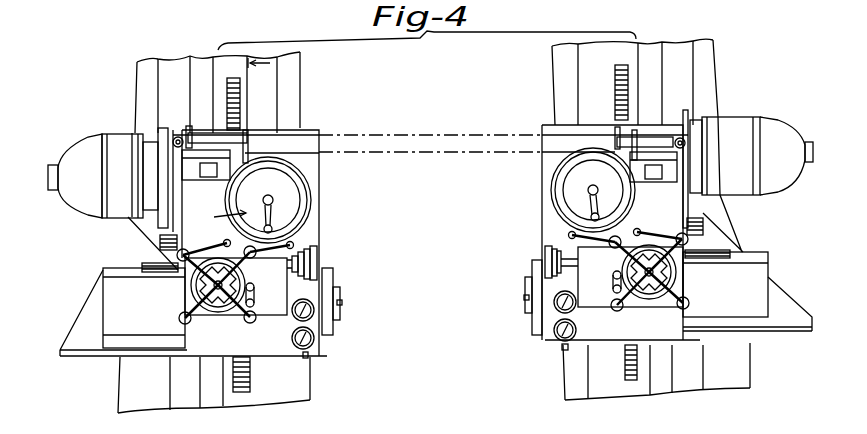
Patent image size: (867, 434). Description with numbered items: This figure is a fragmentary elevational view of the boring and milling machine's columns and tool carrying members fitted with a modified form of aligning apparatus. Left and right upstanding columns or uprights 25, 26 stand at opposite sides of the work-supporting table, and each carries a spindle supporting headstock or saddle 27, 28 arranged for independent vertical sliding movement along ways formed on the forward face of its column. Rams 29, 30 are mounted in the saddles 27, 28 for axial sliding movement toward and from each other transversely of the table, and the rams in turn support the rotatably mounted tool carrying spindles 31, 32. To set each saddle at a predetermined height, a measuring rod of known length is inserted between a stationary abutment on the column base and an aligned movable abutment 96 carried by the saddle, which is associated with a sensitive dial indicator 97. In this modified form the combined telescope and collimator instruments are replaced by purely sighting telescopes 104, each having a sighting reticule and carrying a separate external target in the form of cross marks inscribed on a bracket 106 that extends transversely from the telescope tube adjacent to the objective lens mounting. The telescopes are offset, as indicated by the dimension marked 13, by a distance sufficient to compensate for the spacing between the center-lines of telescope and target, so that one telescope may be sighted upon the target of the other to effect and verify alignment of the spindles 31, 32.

The direction of head movement 13 is at (242, 147).
The left column 25 is at (300, 97).
The right column 26 is at (558, 67).
The spindle supporting headstock or saddle 27 is at (320, 214).
The spindle supporting headstock or saddle 28 is at (547, 160).
The ram 29 is at (333, 268).
The ram 30 is at (537, 262).
The tool carrying spindle 31 is at (341, 298).
The tool carrying spindle 32 is at (527, 283).
The movable abutment 96 is at (308, 358).
The sensitive dial indicator 97 is at (292, 338).
The sighting telescope 104 is at (203, 131).
The bracket 106 is at (252, 152).